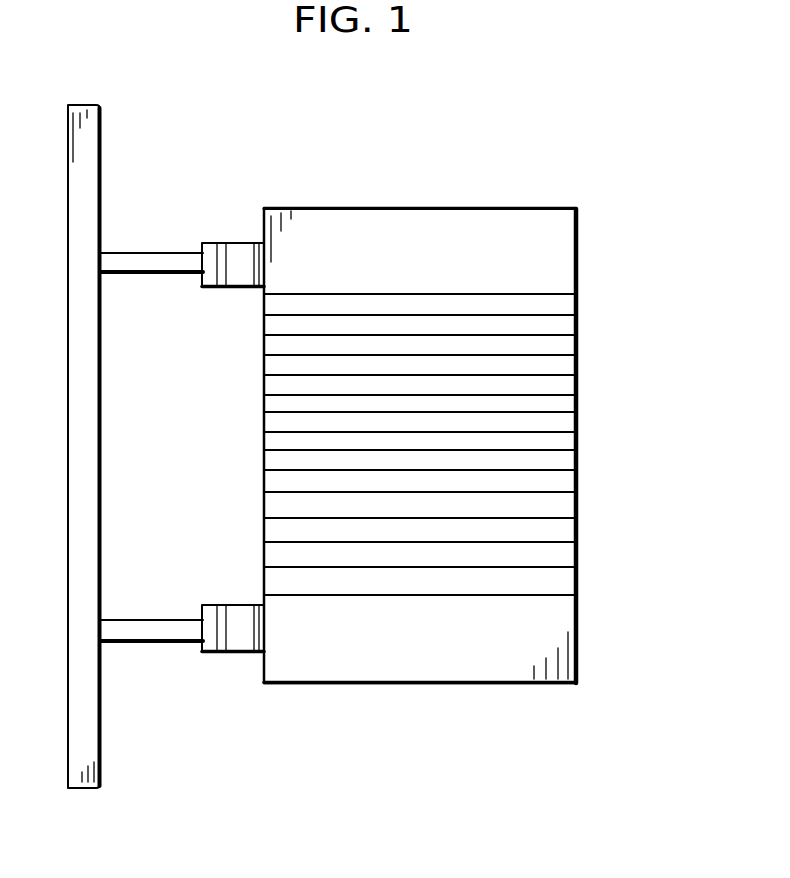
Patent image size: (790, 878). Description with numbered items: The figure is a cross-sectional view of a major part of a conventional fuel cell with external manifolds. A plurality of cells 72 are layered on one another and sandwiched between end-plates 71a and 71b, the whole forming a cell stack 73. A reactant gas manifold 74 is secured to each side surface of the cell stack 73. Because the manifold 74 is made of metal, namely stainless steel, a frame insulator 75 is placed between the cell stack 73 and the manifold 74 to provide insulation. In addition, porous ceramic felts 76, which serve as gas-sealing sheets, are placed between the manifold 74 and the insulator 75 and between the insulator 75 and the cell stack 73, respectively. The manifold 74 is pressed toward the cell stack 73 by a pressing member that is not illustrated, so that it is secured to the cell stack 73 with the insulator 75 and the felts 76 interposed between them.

The end-plate 71a is at (420, 251).
The end-plate 71b is at (420, 639).
The cells 72 is at (565, 328).
The cell stack 73 is at (592, 210).
The reactant gas manifold 74 is at (110, 252).
The frame insulator 75 is at (236, 656).
The porous ceramic felts 76 is at (216, 243).